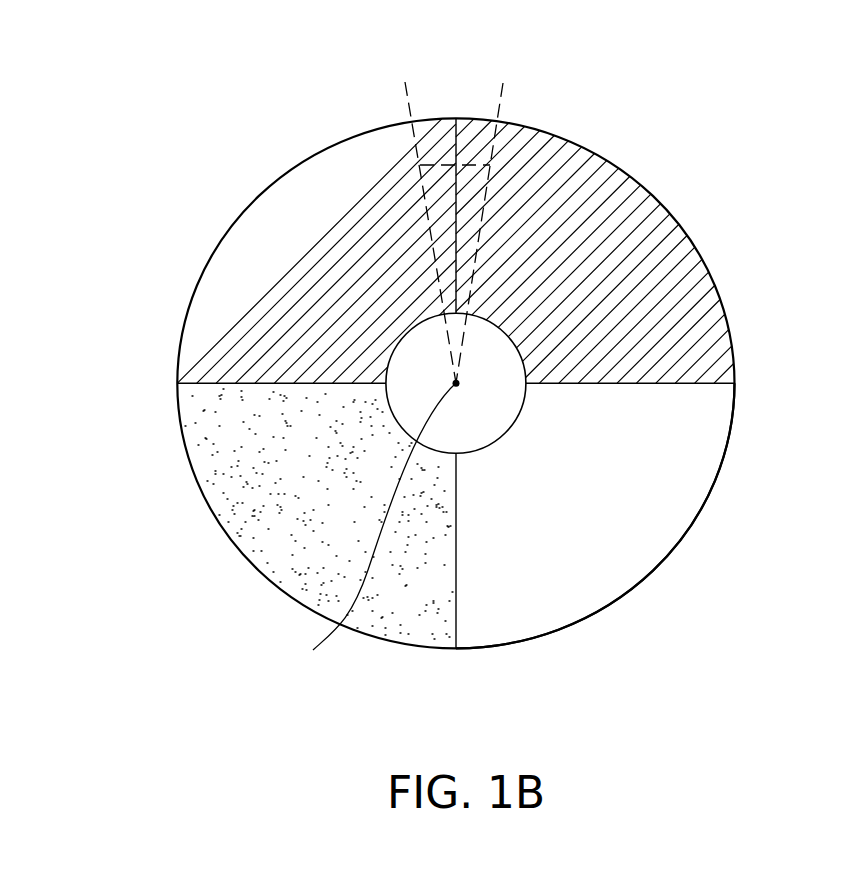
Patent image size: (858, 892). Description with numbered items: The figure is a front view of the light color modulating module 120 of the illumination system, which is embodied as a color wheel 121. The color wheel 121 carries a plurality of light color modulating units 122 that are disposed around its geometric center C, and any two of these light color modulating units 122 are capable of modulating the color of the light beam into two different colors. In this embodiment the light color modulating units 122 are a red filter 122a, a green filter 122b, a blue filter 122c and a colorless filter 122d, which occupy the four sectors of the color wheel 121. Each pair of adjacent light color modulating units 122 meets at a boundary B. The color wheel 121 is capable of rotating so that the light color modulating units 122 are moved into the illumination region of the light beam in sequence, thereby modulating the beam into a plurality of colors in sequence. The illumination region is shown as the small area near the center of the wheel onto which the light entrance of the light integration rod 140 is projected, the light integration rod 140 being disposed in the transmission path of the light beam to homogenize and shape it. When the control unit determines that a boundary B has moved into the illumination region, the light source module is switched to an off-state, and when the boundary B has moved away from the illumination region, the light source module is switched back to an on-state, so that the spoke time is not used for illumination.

The light color modulating module 120 is at (446, 375).
The color wheel 121 is at (712, 277).
The light color modulating units 122 is at (446, 384).
The red filter 122a is at (290, 202).
The green filter 122b is at (637, 207).
The blue filter 122c is at (244, 507).
The colorless filter 122d is at (662, 507).
The light integration rod 140 is at (417, 122).
The boundary B is at (458, 152).
The geometric center C is at (375, 529).